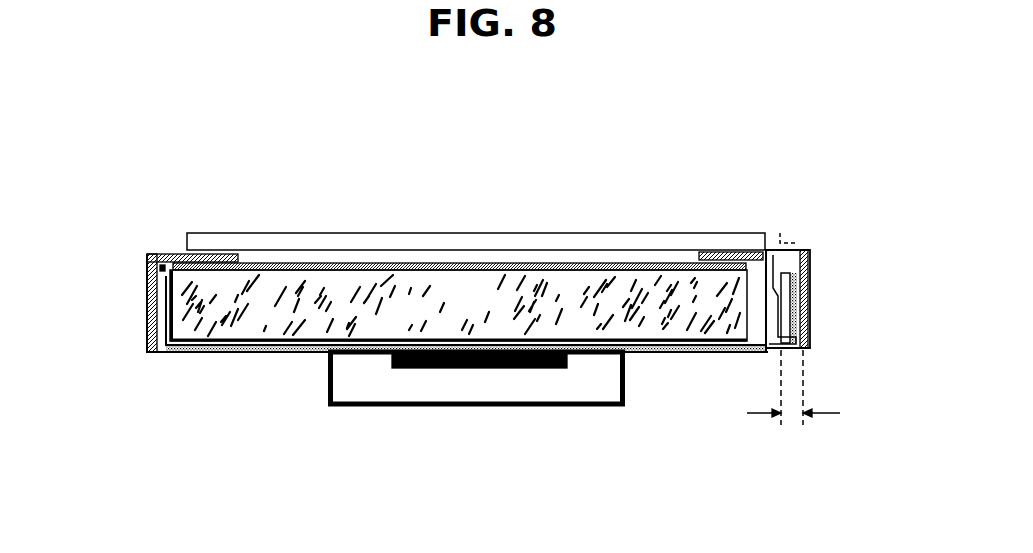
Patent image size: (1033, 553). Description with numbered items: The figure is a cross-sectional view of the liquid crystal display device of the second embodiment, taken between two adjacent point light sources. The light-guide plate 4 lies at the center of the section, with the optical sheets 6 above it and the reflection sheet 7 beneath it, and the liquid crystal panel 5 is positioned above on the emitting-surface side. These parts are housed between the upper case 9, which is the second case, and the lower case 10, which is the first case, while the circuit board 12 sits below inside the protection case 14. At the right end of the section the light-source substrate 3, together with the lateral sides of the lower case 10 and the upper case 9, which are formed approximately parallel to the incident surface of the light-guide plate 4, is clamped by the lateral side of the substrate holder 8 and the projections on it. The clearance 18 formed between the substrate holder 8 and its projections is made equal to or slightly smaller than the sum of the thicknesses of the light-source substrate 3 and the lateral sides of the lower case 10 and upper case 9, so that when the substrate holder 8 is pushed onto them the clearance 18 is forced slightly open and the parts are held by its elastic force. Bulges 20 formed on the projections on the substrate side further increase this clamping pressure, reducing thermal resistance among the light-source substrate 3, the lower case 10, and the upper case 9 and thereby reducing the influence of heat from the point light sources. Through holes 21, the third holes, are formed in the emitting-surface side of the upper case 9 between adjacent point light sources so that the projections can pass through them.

The light-source substrate 3 is at (774, 347).
The light-guide plate 4 is at (315, 302).
The liquid crystal panel 5 is at (635, 243).
The optical sheets 6 is at (460, 262).
The reflection sheet 7 is at (173, 352).
The substrate holder 8 is at (810, 287).
The upper case 9 is at (148, 255).
The lower case 10 is at (252, 355).
The circuit board 12 is at (390, 368).
The protection case 14 is at (325, 408).
The clearance 18 is at (793, 403).
The bulges 20 is at (767, 297).
The through holes 21 is at (783, 231).